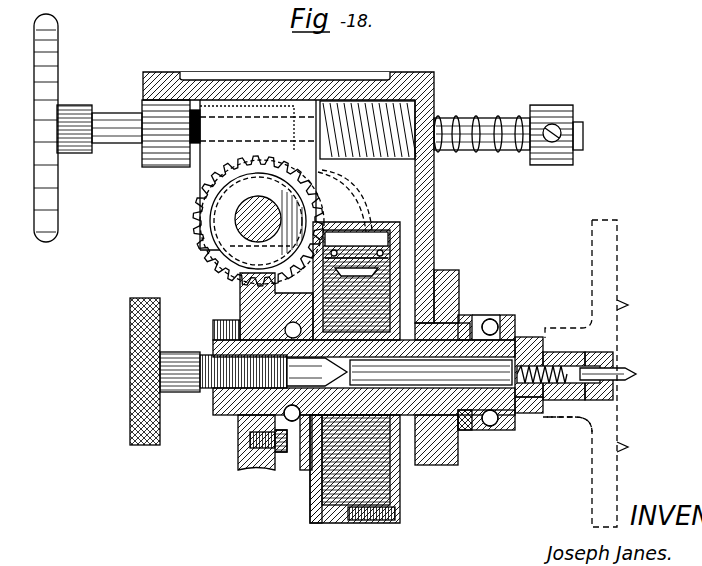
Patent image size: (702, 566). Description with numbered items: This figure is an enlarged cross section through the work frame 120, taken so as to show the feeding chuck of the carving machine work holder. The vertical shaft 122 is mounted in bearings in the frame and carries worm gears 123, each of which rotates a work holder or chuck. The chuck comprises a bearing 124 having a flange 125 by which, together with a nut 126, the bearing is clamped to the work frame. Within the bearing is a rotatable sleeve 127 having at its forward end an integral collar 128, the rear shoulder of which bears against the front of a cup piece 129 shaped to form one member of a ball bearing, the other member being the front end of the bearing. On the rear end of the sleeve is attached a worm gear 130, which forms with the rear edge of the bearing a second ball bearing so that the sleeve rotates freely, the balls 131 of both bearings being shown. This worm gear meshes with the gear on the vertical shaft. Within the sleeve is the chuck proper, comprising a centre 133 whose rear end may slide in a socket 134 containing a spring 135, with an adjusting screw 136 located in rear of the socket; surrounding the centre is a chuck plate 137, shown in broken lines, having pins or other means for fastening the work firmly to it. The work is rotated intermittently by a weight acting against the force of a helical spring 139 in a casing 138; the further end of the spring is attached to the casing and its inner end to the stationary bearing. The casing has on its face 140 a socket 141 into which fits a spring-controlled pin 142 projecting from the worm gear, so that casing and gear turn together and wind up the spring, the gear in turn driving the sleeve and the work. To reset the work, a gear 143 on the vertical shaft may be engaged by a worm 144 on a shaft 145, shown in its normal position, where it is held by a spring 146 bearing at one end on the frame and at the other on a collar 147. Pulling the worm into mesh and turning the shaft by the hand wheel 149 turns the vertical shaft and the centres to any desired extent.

The work frame 120 is at (397, 72).
The shaft 122 is at (245, 226).
The worm gear 123 is at (207, 200).
The bearing 124 is at (410, 300).
The flange 125 is at (458, 300).
The nut 126 is at (467, 313).
The rotatable sleeve 127 is at (212, 397).
The collar 128 is at (535, 416).
The cup piece 129 is at (513, 324).
The worm gear 130 is at (240, 460).
The balls 131 is at (292, 455).
The centre 133 is at (637, 376).
The socket 134 is at (580, 400).
The spring 135 is at (565, 418).
The adjusting screw 136 is at (131, 440).
The chuck plate 137 is at (617, 286).
The casing 138 is at (400, 496).
The helical spring 139 is at (346, 522).
The face 140 is at (311, 480).
The socket 141 is at (310, 450).
The spring-controlled pin 142 is at (268, 458).
The gear 143 is at (190, 218).
The worm 144 is at (420, 172).
The shaft 145 is at (110, 120).
The spring 146 is at (496, 120).
The collar 147 is at (574, 113).
The hand wheel 149 is at (58, 35).